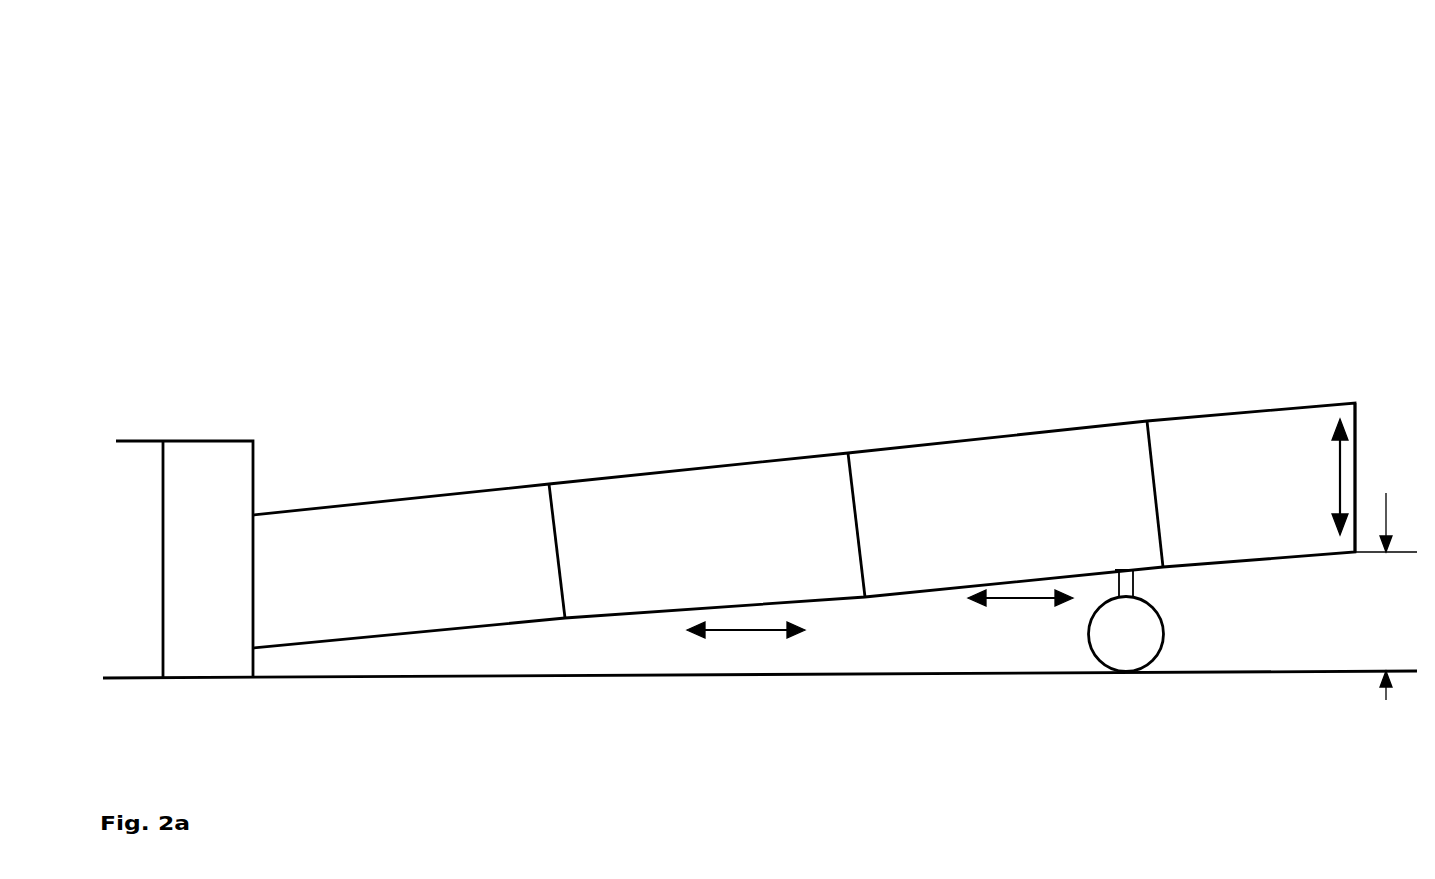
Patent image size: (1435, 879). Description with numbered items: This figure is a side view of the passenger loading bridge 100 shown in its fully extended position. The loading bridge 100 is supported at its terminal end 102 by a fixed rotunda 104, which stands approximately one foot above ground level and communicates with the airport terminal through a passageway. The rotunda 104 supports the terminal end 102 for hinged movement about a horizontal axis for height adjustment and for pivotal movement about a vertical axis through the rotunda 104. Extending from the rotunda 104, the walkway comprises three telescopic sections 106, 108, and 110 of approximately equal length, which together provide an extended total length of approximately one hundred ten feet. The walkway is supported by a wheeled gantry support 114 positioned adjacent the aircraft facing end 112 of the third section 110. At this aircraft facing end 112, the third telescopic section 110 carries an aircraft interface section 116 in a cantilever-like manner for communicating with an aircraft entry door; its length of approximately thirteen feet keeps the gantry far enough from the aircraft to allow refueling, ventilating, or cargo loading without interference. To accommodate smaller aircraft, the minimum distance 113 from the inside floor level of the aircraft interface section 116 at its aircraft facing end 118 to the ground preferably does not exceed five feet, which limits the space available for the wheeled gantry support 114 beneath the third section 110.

The loading bridge 100 is at (1158, 105).
The terminal end 102 is at (255, 568).
The rotunda 104 is at (206, 483).
The first telescopic section 106 is at (430, 527).
The second telescopic section 108 is at (683, 482).
The third telescopic section 110 is at (997, 479).
The aircraft facing end 112 is at (1163, 508).
The minimum distance 113 is at (1386, 596).
The wheeled gantry support 114 is at (1120, 628).
The aircraft interface section 116 is at (1280, 477).
The aircraft facing end 118 is at (1355, 447).